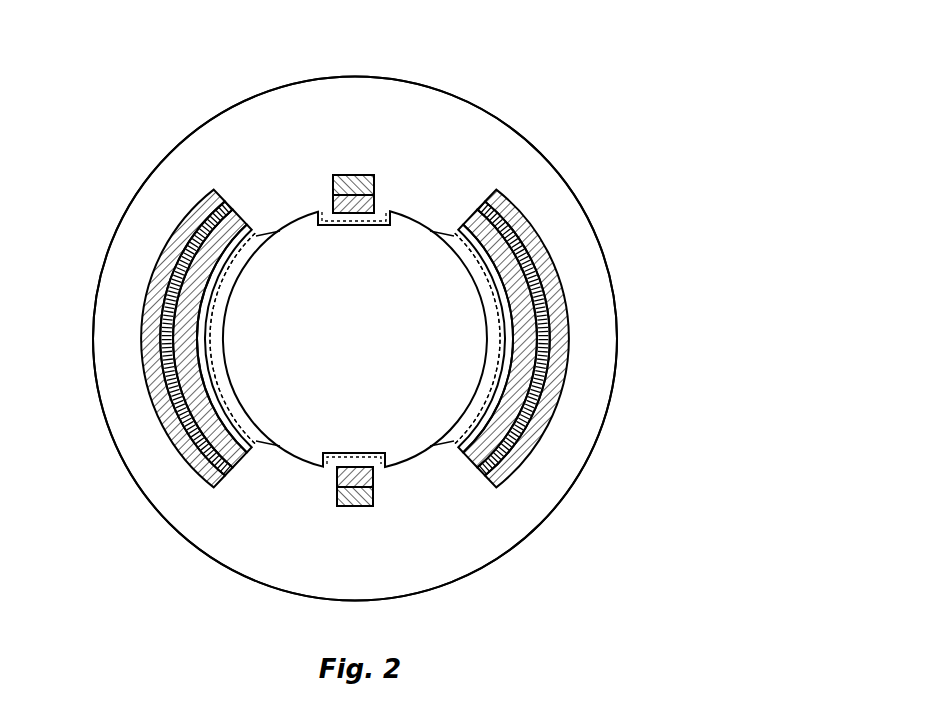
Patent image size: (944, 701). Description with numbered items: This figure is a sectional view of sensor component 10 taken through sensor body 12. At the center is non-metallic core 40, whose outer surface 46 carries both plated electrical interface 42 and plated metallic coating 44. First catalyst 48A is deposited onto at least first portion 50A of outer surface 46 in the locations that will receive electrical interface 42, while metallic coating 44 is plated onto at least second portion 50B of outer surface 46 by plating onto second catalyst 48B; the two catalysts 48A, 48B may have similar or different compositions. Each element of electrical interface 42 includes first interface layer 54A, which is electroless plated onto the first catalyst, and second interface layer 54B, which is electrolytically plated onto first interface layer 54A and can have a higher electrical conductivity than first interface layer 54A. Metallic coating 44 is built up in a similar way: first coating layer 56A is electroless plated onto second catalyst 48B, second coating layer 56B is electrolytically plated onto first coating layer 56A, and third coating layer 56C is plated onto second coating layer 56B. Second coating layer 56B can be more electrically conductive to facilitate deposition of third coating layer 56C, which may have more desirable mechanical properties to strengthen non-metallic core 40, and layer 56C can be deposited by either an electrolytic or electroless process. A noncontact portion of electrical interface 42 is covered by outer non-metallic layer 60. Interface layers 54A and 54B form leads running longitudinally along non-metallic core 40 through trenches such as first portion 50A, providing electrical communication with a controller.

The sensor component 10 is at (573, 96).
The sensor body 12 is at (663, 243).
The non-metallic core 40 is at (361, 351).
The plated electrical interface 42 is at (361, 347).
The plated metallic coating 44 is at (358, 274).
The outer surface 46 is at (419, 460).
The first catalyst 48A is at (324, 222).
The second catalyst 48B is at (259, 450).
The first portion of outer surface 50A is at (391, 213).
The second portion of outer surface 50B is at (224, 304).
The first interface layer 54A is at (376, 200).
The second interface layer 54B is at (377, 178).
The first coating layer 56A is at (246, 218).
The second coating layer 56B is at (232, 203).
The third coating layer 56C is at (222, 191).
The outer non-metallic layer 60 is at (397, 108).